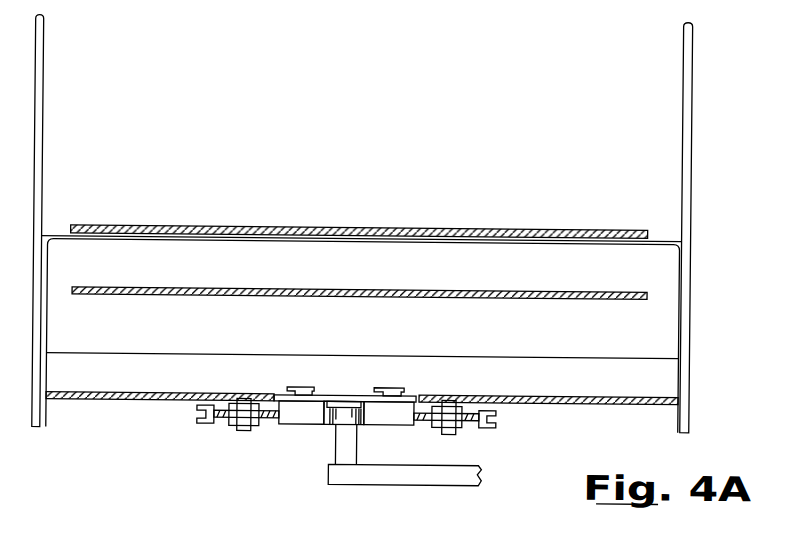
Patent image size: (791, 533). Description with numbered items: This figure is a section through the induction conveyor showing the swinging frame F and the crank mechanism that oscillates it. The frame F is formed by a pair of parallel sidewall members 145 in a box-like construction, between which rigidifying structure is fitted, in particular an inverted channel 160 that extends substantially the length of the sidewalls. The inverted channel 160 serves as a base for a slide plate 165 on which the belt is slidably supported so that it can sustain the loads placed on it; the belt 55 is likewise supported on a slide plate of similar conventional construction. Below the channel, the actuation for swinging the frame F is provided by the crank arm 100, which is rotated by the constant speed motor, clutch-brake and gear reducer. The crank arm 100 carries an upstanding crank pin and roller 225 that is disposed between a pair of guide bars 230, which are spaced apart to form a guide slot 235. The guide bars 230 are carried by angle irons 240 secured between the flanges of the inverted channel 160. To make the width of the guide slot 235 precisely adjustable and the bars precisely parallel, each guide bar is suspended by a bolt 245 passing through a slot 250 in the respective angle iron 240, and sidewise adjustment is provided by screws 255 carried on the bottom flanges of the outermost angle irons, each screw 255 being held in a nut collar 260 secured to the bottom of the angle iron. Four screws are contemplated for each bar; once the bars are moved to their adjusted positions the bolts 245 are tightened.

The parallel sidewall members 145 is at (38, 66).
The frame F is at (682, 65).
The belt 55 is at (446, 228).
The slide plate 165 is at (44, 235).
The inverted channel 160 is at (48, 343).
The angle irons 240 is at (573, 388).
The slot 250 is at (337, 397).
The bolt 245 is at (392, 388).
The guide bars 230 is at (318, 427).
The guide slot 235 is at (352, 402).
The nut collar 260 is at (447, 400).
The screws 255 is at (485, 427).
The crank pin and roller 225 is at (332, 427).
The crank arm 100 is at (435, 476).